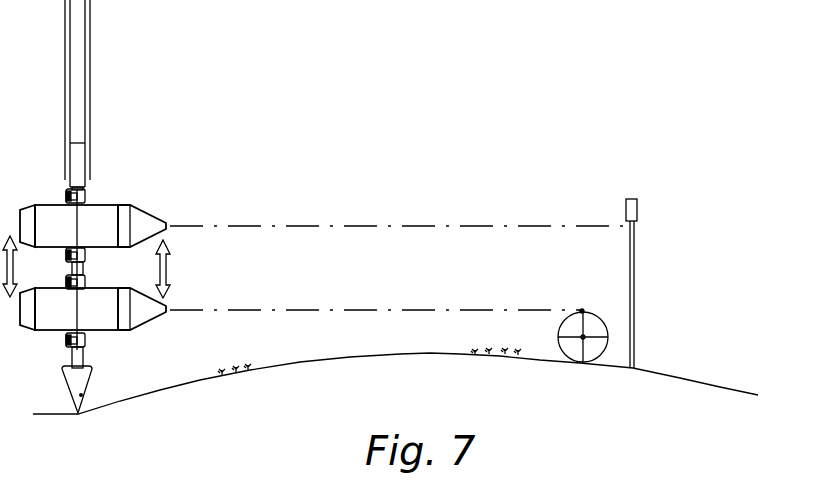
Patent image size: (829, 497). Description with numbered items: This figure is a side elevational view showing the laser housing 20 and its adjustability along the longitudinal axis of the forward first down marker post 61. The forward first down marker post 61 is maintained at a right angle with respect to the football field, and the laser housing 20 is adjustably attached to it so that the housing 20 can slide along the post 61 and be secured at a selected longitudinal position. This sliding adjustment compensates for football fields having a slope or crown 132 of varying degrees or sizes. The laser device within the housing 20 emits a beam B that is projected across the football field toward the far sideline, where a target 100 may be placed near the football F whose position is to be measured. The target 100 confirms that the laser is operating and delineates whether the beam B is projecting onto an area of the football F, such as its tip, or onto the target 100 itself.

The forward first down marker post 61 is at (120, 30).
The laser housing 20 is at (100, 205).
The beam B is at (306, 304).
The target 100 is at (635, 251).
The football F is at (602, 353).
The slope or crown 132 is at (419, 360).